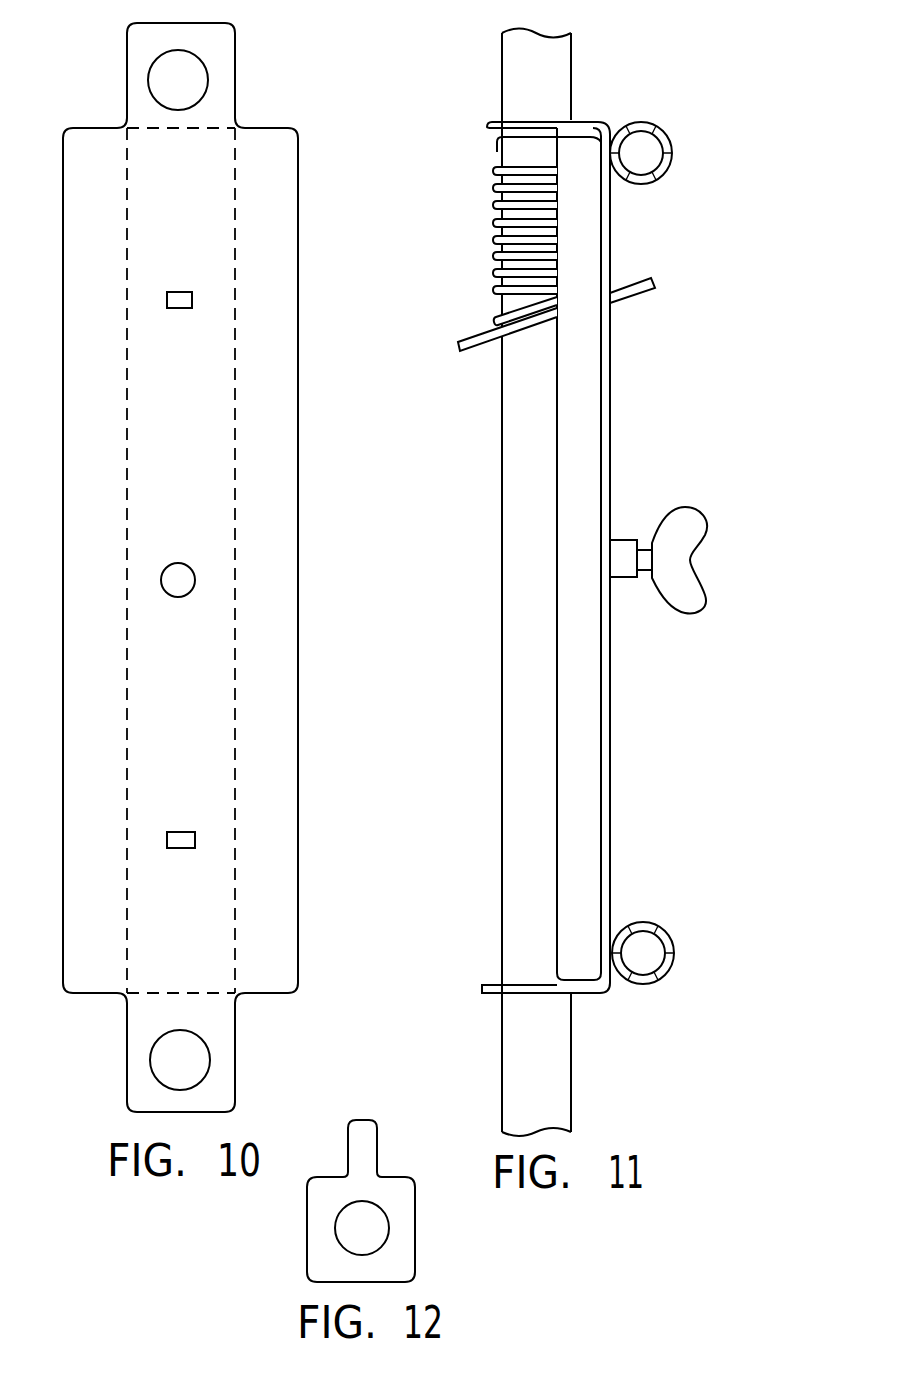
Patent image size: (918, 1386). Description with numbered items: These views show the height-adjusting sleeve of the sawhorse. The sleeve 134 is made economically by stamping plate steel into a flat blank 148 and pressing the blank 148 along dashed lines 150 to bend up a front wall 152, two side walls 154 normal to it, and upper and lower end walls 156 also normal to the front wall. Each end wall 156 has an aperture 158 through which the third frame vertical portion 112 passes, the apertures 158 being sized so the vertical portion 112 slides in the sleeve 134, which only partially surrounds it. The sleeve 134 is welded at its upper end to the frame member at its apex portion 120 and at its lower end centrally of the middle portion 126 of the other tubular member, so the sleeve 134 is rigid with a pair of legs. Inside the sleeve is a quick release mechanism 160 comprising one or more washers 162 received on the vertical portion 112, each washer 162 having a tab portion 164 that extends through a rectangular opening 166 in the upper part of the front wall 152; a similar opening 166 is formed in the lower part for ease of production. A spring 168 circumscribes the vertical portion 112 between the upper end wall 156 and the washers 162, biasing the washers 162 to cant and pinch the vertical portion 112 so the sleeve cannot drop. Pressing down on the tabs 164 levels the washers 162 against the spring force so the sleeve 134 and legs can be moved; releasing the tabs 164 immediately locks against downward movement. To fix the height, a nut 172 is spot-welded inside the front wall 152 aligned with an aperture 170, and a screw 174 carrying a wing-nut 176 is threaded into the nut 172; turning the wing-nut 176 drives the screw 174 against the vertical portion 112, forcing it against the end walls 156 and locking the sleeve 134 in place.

In FIG. 11, the third frame vertical portion 112 is at (517, 745).
In FIG. 11, the apex portion 120 is at (665, 135).
In FIG. 11, the middle portion 126 is at (667, 935).
In FIG. 11, the vertical sleeve 134 is at (590, 562).
In FIG. 10, the blank 148 is at (284, 95).
In FIG. 10, the dashed lines 150 is at (203, 128).
In FIG. 10, the front wall 152 is at (200, 387).
In FIG. 11, the front wall 152 is at (615, 722).
In FIG. 10, the side walls 154 is at (80, 332).
In FIG. 11, the side walls 154 is at (580, 832).
In FIG. 10, the end walls 156 is at (157, 31).
In FIG. 11, the end walls 156 is at (578, 125).
In FIG. 10, the apertures 158 is at (177, 69).
In FIG. 11, the quick release mechanism 160 is at (544, 292).
In FIG. 11, the washer 162 is at (458, 343).
In FIG. 12, the washer 162 is at (417, 1235).
In FIG. 11, the tab portion 164 is at (632, 275).
In FIG. 12, the tab portion 164 is at (368, 1143).
In FIG. 10, the rectangular opening 166 is at (180, 295).
In FIG. 11, the spring 168 is at (497, 180).
In FIG. 10, the aperture 170 is at (183, 580).
In FIG. 11, the nut 172 is at (627, 578).
In FIG. 11, the screw 174 is at (652, 547).
In FIG. 11, the wing-nut 176 is at (697, 522).